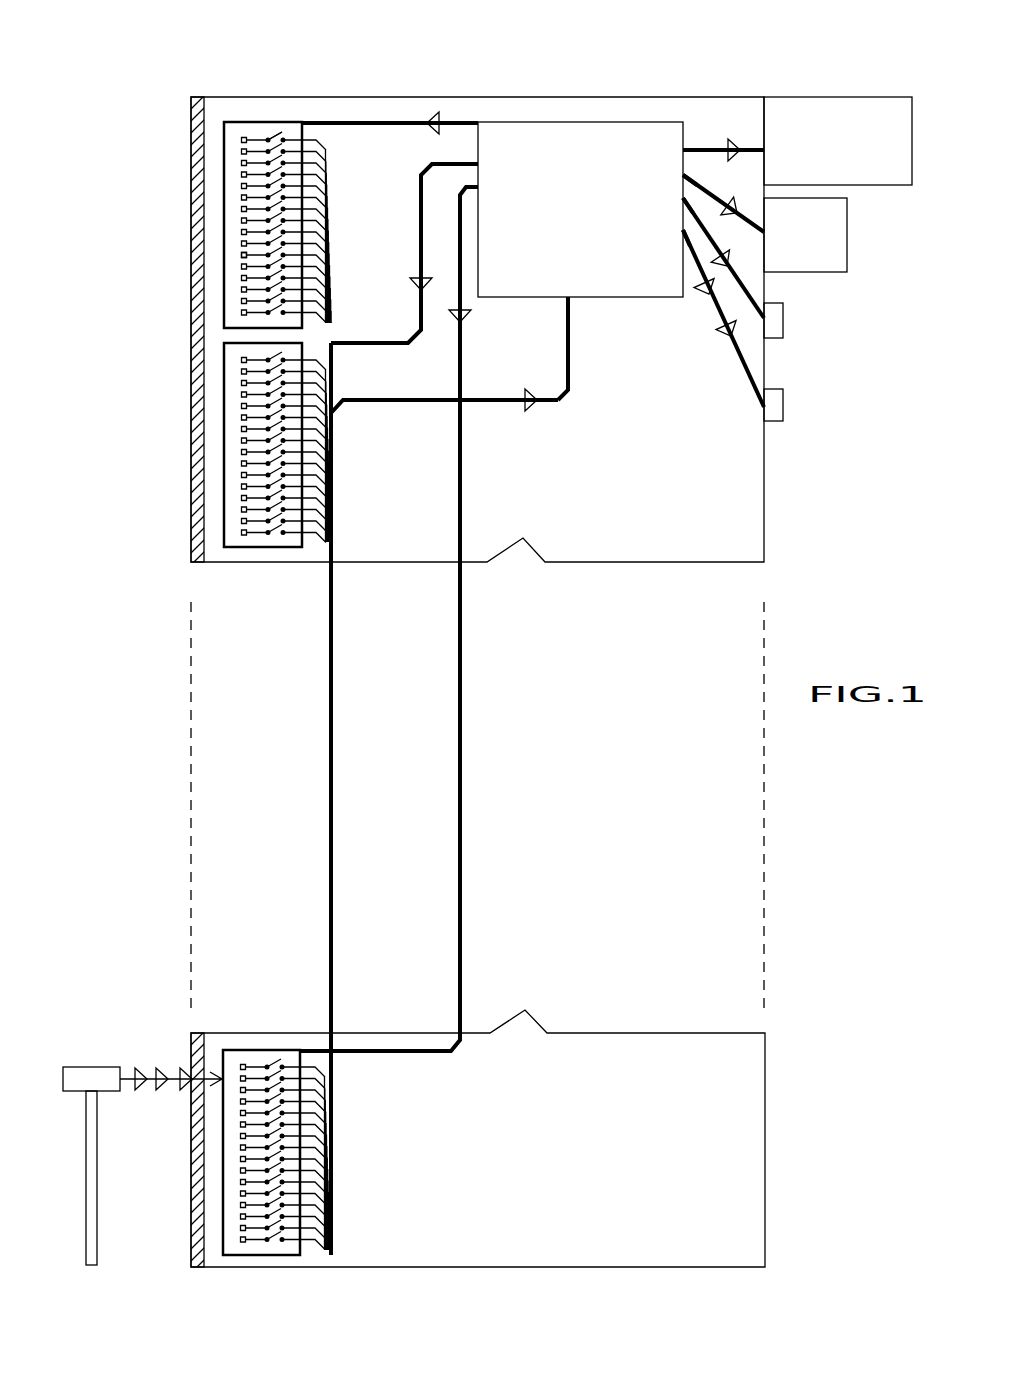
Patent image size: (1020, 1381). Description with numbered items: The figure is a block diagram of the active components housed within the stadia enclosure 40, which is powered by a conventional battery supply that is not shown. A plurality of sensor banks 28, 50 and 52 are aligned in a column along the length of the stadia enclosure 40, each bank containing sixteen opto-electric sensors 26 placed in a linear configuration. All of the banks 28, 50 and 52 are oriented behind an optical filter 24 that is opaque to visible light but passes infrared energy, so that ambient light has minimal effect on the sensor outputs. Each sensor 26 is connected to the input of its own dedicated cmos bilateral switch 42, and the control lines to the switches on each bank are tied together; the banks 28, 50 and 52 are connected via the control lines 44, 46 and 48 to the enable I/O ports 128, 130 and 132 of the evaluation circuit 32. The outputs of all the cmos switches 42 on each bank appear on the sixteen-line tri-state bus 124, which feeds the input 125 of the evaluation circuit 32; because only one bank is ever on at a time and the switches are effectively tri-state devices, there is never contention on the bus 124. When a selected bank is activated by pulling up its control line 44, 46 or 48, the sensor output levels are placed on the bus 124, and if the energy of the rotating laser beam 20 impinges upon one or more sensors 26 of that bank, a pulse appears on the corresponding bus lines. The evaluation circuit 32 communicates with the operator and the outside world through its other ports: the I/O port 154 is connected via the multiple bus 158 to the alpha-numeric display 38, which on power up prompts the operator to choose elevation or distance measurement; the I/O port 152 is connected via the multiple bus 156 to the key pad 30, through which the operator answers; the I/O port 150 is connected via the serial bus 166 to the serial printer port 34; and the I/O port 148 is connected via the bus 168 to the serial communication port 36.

The rotating laser beam 20 is at (78, 1067).
The optical filter 24 is at (198, 142).
The opto-electric sensor 26 is at (242, 255).
The sensor bank 28 is at (223, 223).
The key pad 30 is at (840, 220).
The evaluation circuit 32 is at (568, 122).
The serial printer port 34 is at (783, 318).
The serial communication port 36 is at (783, 407).
The alpha-numeric display 38 is at (868, 133).
The stadia enclosure 40 is at (495, 97).
The cmos bilateral switch 42 is at (280, 134).
The control line 44 is at (395, 122).
The control line 46 is at (418, 298).
The control line 48 is at (460, 330).
The sensor bank 50 is at (223, 410).
The sensor bank 52 is at (223, 1163).
The tri-state bus 124 is at (378, 403).
The input of evaluation circuit 125 is at (570, 298).
The enable I/O port 128 is at (477, 123).
The enable I/O port 130 is at (468, 167).
The enable I/O port 132 is at (473, 187).
The I/O port 148 is at (683, 233).
The I/O port 150 is at (683, 198).
The I/O port 152 is at (683, 170).
The I/O port 154 is at (683, 145).
The multiple bus 156 is at (728, 188).
The multiple bus 158 is at (698, 145).
The serial bus 166 is at (748, 293).
The bus 168 is at (739, 350).